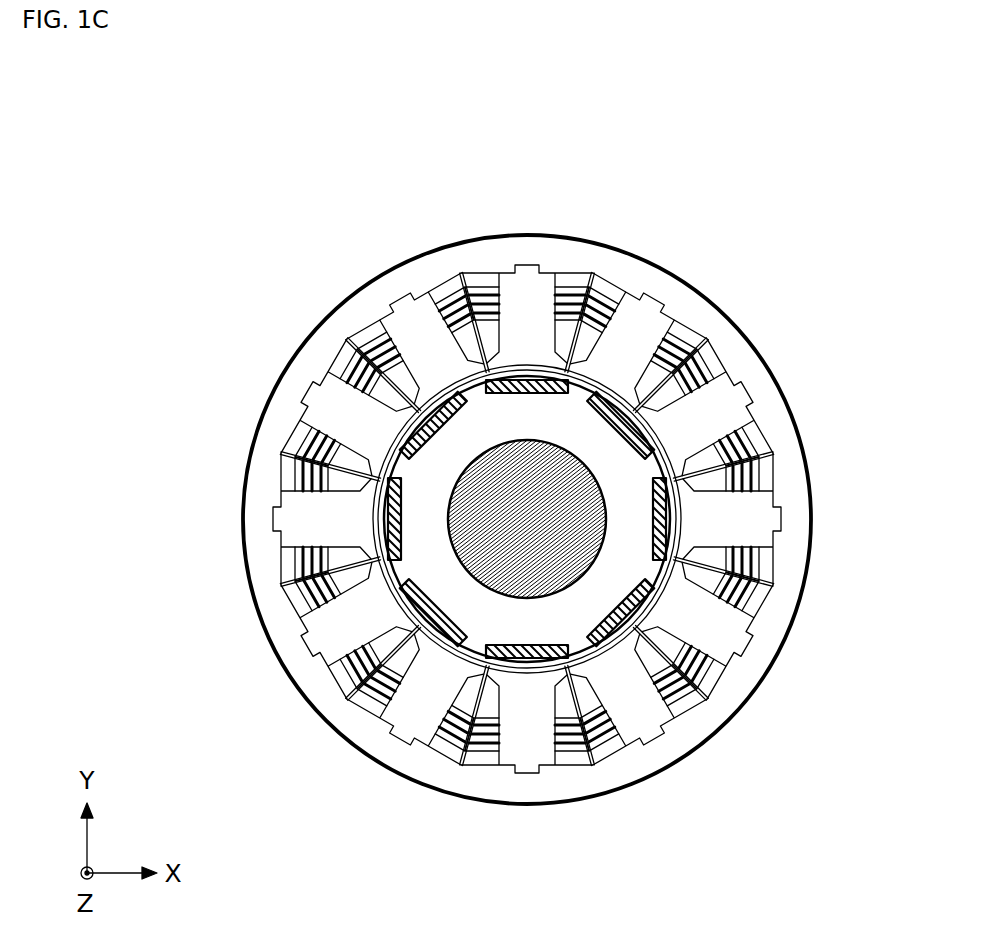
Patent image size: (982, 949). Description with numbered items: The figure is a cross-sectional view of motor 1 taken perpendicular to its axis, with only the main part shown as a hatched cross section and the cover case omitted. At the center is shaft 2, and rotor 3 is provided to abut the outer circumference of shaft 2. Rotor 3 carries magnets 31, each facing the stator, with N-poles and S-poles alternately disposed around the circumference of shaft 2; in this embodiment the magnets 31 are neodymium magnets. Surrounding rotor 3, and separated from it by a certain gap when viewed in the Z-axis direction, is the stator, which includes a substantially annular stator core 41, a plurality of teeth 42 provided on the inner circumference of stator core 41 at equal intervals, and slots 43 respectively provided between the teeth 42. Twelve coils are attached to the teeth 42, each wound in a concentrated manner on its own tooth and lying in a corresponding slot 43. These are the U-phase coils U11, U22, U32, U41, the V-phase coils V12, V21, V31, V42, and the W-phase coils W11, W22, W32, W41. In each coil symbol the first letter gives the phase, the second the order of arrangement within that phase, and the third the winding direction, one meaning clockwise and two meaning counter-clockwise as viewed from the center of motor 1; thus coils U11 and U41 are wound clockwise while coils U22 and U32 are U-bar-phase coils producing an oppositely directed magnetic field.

The motor 1 is at (314, 162).
The shaft 2 is at (468, 487).
The rotor 3 is at (424, 484).
The magnets 31 is at (462, 401).
The stator core 41 is at (737, 337).
The teeth 42 is at (527, 519).
The slots 43 is at (531, 507).
The coil U11 is at (404, 287).
The coil U22 is at (280, 391).
The coil U32 is at (650, 750).
The coil U41 is at (774, 647).
The coil V12 is at (244, 519).
The coil V21 is at (278, 647).
The coil V31 is at (813, 519).
The coil V42 is at (775, 389).
The coil W11 is at (404, 750).
The coil W22 is at (527, 805).
The coil W32 is at (651, 286).
The coil W41 is at (572, 273).